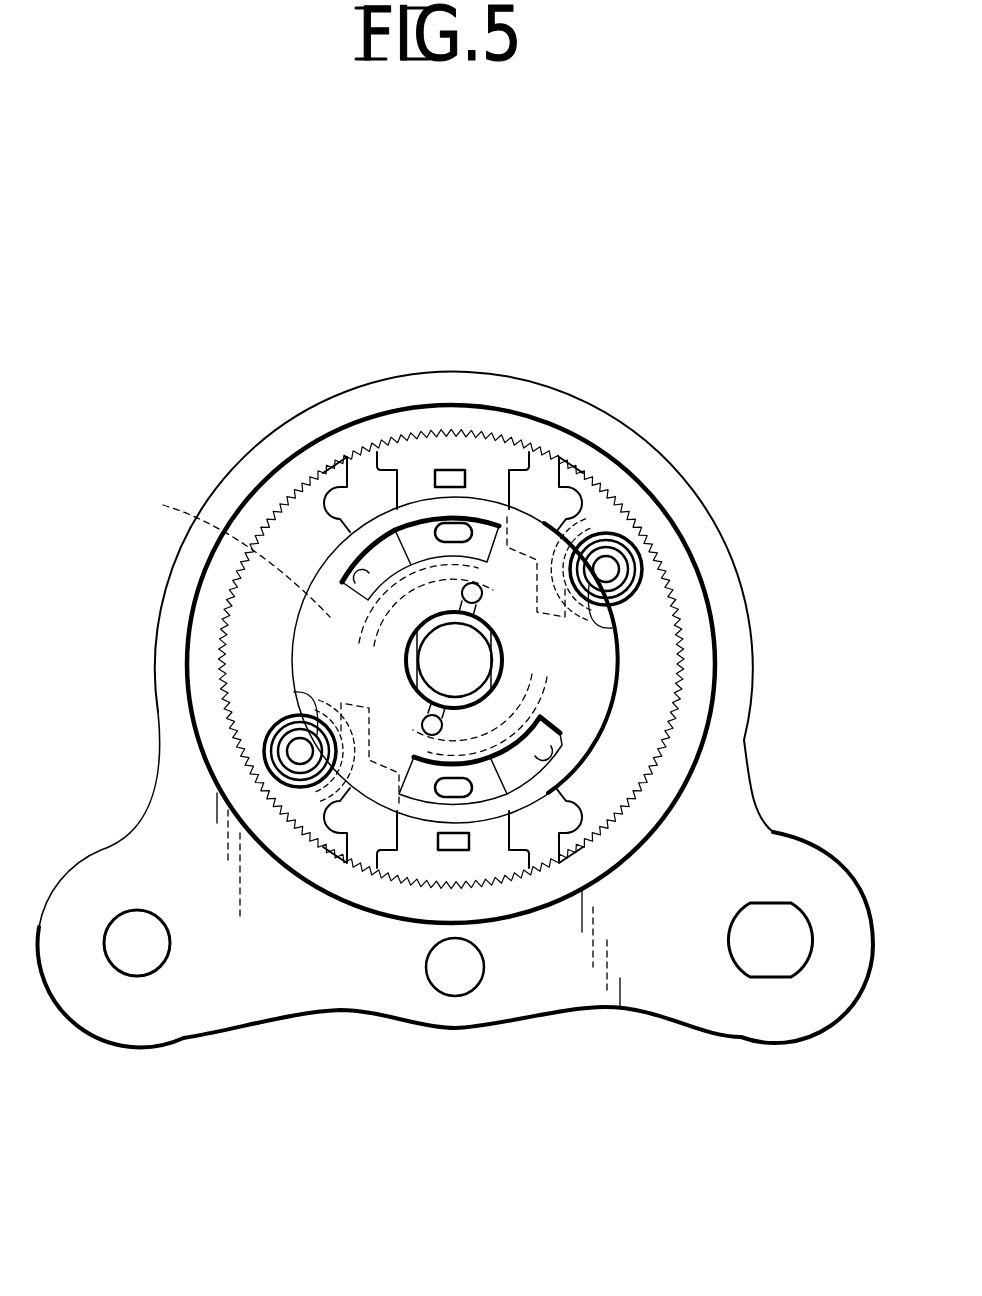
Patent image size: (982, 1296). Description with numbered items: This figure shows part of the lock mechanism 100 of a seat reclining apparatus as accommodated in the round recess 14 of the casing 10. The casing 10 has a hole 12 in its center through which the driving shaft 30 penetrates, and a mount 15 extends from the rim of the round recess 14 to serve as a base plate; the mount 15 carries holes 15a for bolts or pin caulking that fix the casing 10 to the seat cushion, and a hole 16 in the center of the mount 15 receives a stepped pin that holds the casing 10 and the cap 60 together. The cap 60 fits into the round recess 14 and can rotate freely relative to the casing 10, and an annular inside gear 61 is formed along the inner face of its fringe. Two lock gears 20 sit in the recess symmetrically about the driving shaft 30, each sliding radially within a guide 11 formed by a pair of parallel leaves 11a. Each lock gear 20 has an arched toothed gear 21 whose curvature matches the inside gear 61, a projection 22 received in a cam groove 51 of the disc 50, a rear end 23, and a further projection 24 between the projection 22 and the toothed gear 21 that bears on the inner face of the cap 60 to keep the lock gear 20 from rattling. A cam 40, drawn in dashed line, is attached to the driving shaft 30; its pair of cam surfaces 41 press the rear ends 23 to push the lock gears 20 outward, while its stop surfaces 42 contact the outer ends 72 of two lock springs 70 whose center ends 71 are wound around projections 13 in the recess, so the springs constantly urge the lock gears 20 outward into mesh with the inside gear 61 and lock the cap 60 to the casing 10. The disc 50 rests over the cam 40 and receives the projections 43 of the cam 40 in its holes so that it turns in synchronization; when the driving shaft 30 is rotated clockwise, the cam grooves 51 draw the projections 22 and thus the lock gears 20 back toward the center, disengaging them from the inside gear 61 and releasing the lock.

The lock mechanism 100 is at (637, 310).
The casing 10 is at (320, 395).
The guide 11 is at (358, 445).
The parallel leaves 11a is at (362, 468).
The hole 12 is at (248, 722).
The projection 13 is at (606, 569).
The round recess 14 is at (293, 430).
The mount 15 is at (688, 1005).
The holes 15a is at (780, 958).
The hole 16 is at (440, 962).
The lock gear 20 is at (518, 448).
The toothed gear 21 is at (420, 478).
The projection 22 is at (462, 527).
The rear end 23 is at (224, 552).
The projection 24 is at (446, 470).
The driving shaft 30 is at (465, 663).
The cam 40 is at (555, 512).
The cam surfaces 41 is at (525, 565).
The stop surfaces 42 is at (560, 645).
The projections 43 is at (462, 626).
The disc 50 is at (313, 655).
The cam grooves 51 is at (360, 562).
The cap 60 is at (282, 488).
The inside gear 61 is at (650, 752).
The lock spring 70 is at (637, 546).
The center end 71 is at (625, 620).
The outer end 72 is at (557, 636).